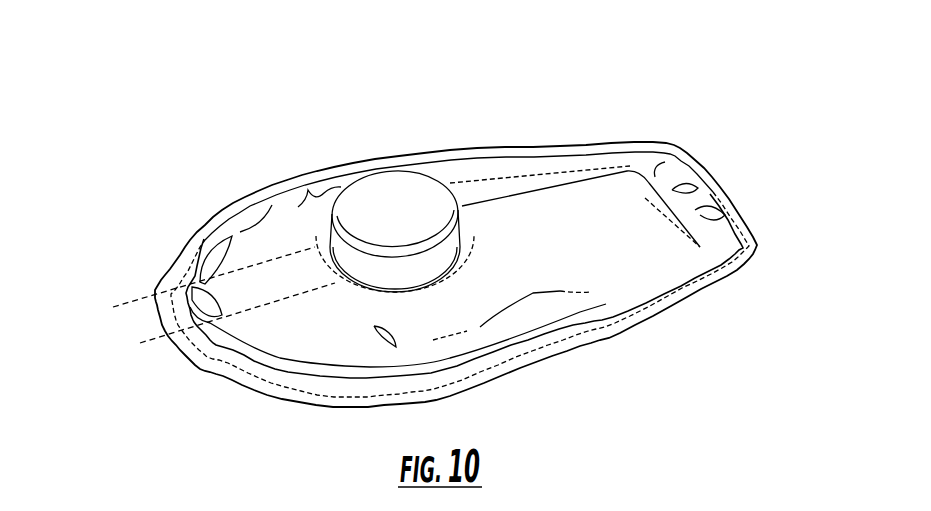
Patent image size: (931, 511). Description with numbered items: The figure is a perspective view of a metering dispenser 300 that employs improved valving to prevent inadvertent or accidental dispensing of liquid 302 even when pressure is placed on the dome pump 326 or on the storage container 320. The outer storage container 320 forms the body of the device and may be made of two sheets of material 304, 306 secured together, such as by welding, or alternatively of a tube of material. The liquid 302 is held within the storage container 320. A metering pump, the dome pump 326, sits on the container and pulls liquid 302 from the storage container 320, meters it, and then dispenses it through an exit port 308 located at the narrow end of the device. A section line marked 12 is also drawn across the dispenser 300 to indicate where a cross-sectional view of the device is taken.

The metering dispenser 300 is at (512, 98).
The liquid 302 is at (303, 203).
The sheet of material 304 is at (252, 226).
The sheet of material 306 is at (192, 247).
The exit port 308 is at (160, 277).
The storage container 320 is at (567, 160).
The dome pump 326 is at (428, 174).
The section line 12- 12 is at (437, 243).